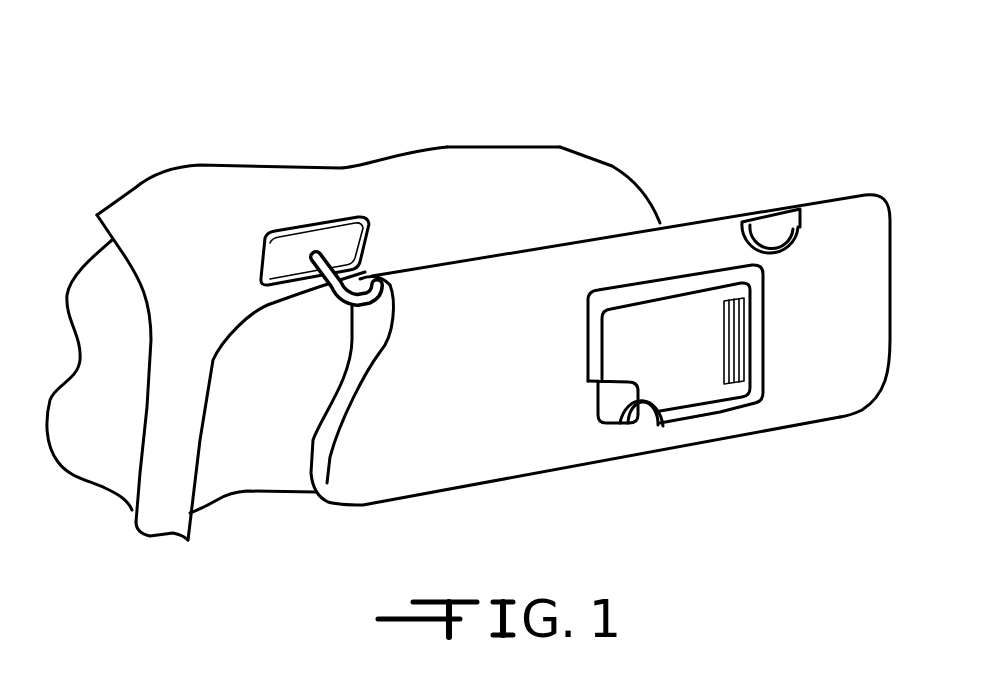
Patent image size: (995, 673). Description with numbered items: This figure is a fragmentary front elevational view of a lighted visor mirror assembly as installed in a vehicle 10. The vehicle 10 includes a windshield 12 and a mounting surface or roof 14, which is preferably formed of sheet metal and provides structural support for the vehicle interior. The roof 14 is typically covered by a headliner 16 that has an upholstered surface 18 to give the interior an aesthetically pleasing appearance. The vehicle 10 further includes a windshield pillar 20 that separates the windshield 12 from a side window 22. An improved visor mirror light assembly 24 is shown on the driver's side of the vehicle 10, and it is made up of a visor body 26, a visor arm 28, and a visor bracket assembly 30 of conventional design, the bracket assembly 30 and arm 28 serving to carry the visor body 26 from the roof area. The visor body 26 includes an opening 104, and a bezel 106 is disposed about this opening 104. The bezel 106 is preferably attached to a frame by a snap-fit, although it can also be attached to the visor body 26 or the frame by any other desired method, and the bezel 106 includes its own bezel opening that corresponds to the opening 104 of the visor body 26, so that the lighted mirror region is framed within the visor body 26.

The vehicle 10 is at (238, 110).
The windshield 12 is at (252, 417).
The mounting surface or roof 14 is at (522, 148).
The headliner 16 is at (610, 197).
The upholstered surface 18 is at (457, 228).
The windshield pillar 20 is at (159, 437).
The side window 22 is at (84, 437).
The visor mirror light assembly 24 is at (698, 214).
The visor body 26 is at (420, 470).
The visor arm 28 is at (330, 281).
The visor bracket assembly 30 is at (328, 217).
The opening 104 is at (648, 393).
The bezel 106 is at (760, 357).